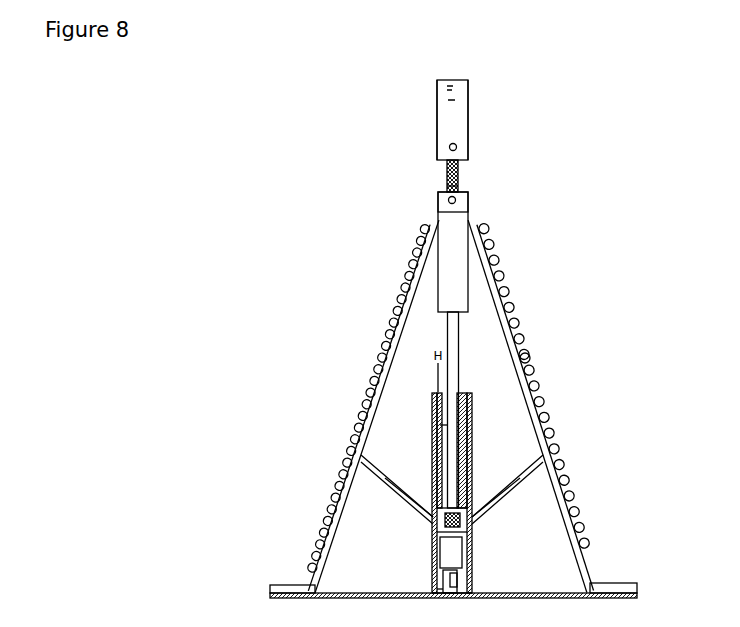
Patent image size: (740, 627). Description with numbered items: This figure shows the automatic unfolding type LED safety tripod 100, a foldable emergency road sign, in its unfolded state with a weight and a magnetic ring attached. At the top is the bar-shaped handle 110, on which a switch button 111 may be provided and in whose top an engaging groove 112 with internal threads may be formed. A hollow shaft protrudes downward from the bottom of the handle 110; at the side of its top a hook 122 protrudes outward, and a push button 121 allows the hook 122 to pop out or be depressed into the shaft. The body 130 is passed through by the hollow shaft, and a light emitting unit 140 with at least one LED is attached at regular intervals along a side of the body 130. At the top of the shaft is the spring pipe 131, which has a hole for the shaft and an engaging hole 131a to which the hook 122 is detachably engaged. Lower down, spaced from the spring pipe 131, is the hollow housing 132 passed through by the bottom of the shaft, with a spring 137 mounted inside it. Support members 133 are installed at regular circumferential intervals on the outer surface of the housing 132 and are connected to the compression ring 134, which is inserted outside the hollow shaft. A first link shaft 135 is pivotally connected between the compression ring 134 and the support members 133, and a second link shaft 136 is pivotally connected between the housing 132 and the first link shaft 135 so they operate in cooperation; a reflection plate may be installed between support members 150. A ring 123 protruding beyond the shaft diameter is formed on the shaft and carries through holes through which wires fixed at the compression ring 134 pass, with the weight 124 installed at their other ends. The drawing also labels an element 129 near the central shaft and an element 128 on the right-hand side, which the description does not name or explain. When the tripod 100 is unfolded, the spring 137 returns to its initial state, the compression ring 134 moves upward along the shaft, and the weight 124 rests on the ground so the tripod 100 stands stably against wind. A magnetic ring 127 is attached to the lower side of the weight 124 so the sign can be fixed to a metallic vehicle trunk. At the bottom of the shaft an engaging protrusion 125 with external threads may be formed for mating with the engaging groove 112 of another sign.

The automatic unfolding type LED safety tripod 100 is at (331, 143).
The engaging groove 112 is at (470, 85).
The bar-shaped handle 110 is at (452, 123).
The switch button 111 is at (459, 147).
The push button 121 is at (460, 170).
The hook 122 is at (447, 187).
The engaging hole 131a is at (458, 202).
The spring pipe 131 is at (452, 265).
The light emitting unit 140 is at (393, 313).
The body 130 is at (518, 320).
The support members 133 is at (522, 358).
The inner rod 129 is at (455, 378).
The ring 123 is at (473, 398).
The first link shaft 135 is at (390, 459).
The right strut 128 is at (475, 458).
The second link shaft 136 is at (412, 508).
The compression ring 134 is at (480, 512).
The spring 137 is at (424, 527).
The housing 132 is at (450, 558).
The engaging protrusion 125 is at (462, 585).
The weight 124 is at (433, 590).
The magnetic ring 127 is at (433, 596).
The support members 150 is at (618, 582).